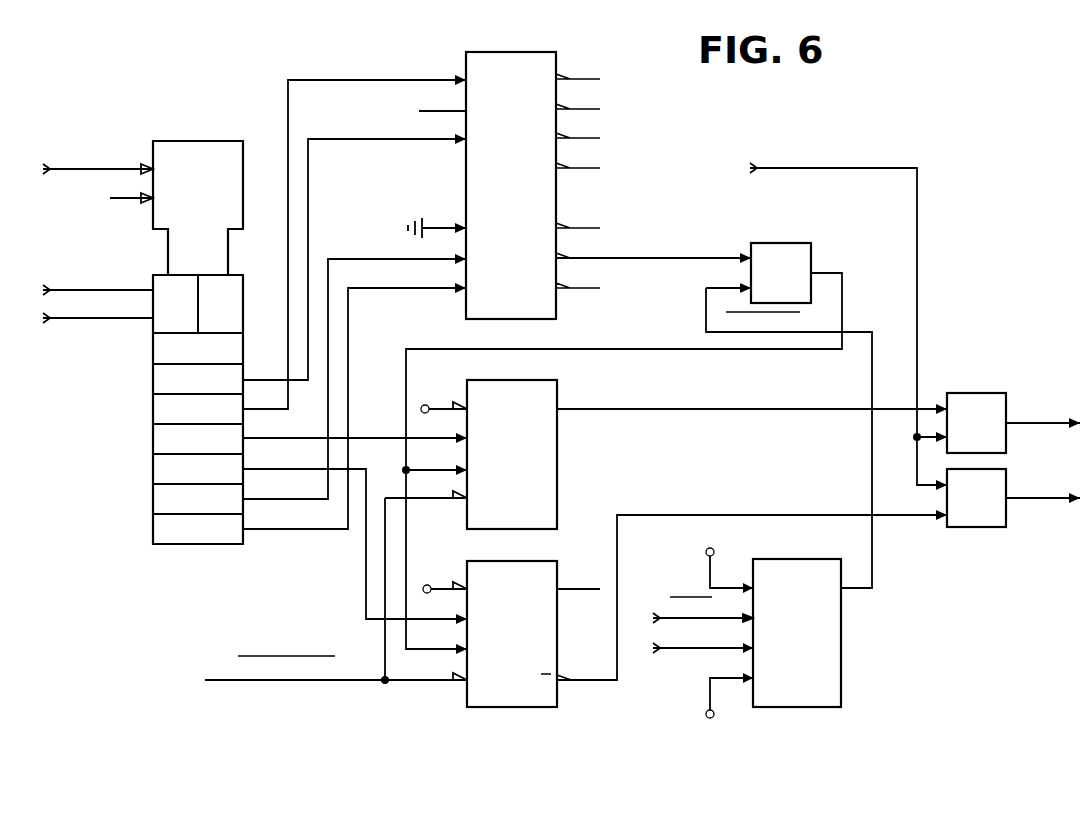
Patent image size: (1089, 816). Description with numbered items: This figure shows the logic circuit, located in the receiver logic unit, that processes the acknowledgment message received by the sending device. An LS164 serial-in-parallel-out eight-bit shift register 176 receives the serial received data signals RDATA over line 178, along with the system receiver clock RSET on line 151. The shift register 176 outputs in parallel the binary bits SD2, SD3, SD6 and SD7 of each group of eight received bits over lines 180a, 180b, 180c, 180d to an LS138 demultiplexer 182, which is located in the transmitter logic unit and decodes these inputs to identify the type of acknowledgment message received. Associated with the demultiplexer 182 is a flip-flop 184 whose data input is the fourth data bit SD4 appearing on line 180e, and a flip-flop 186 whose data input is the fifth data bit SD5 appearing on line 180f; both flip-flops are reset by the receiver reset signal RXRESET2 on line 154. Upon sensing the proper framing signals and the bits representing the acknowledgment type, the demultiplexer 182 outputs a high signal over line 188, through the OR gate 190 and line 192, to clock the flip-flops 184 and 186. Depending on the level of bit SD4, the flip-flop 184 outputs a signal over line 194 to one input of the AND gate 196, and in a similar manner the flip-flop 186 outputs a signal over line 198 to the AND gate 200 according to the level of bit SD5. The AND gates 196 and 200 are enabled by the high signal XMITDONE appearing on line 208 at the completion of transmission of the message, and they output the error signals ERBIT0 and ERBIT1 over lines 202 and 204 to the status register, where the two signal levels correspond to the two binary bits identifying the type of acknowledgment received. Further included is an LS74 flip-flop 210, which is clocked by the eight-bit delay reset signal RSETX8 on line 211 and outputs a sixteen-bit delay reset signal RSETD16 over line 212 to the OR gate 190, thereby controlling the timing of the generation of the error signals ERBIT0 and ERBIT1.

The line 151 is at (110, 172).
The line 154 is at (360, 683).
The shift register 176 is at (200, 141).
The line 178 is at (135, 322).
The line 180a is at (428, 140).
The line 180b is at (320, 79).
The line 180c is at (340, 258).
The line 180d is at (432, 290).
The line 180e is at (318, 437).
The line 180f is at (365, 566).
The demultiplexer 182 is at (500, 58).
The flip-flop 184 is at (558, 388).
The flip-flop 186 is at (558, 560).
The line 188 is at (652, 258).
The OR gate 190 is at (778, 252).
The line 192 is at (652, 348).
The line 194 is at (778, 408).
The AND gate 196 is at (995, 400).
The line 198 is at (785, 514).
The AND gate 200 is at (977, 527).
The line 202 is at (1020, 425).
The line 204 is at (1020, 500).
The line 208 is at (917, 213).
The flip-flop 210 is at (841, 647).
The line 211 is at (688, 650).
The line 212 is at (872, 580).